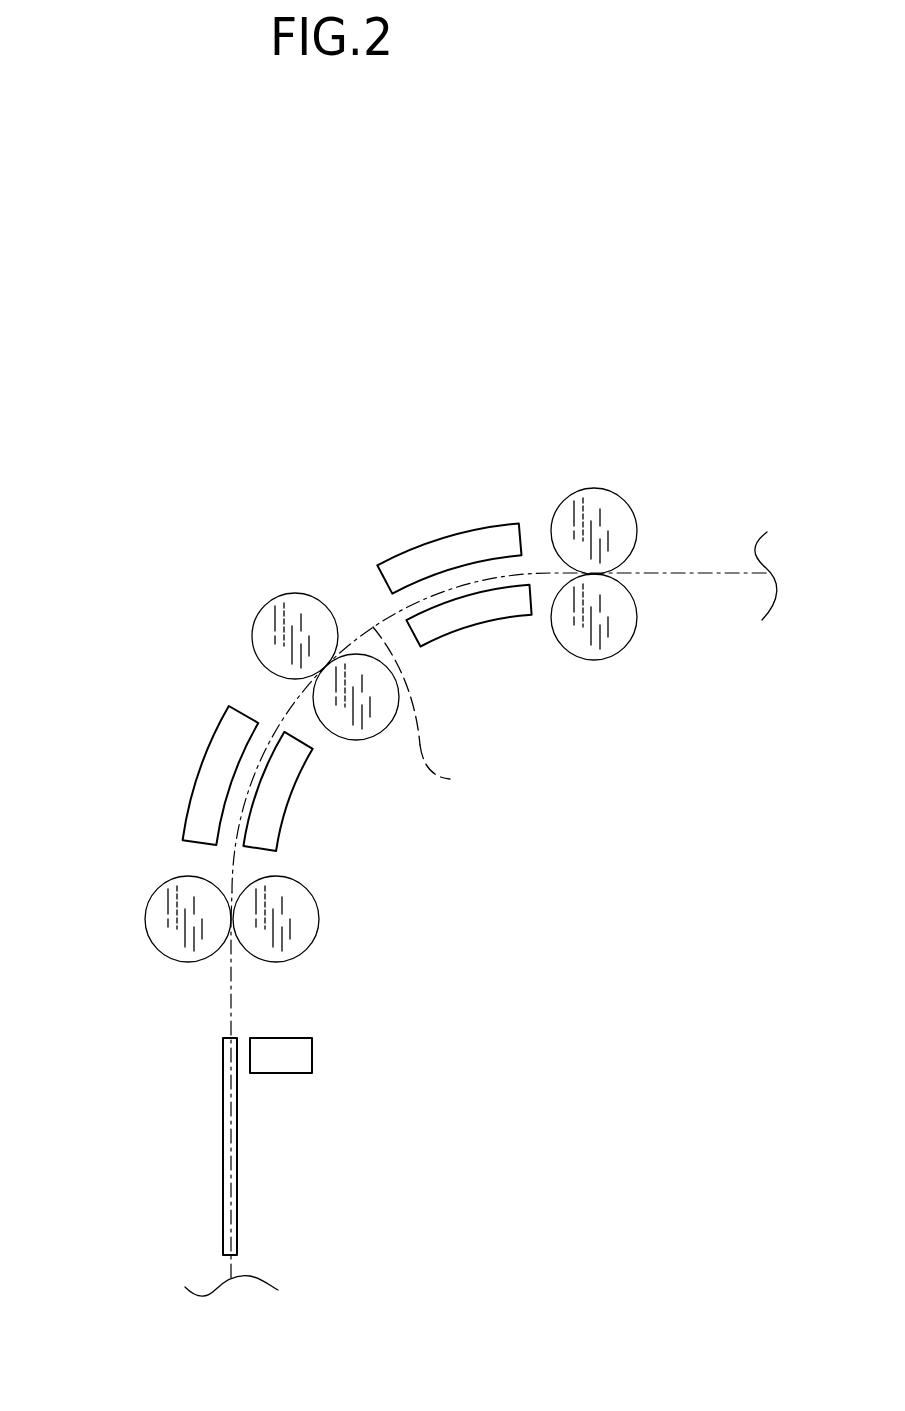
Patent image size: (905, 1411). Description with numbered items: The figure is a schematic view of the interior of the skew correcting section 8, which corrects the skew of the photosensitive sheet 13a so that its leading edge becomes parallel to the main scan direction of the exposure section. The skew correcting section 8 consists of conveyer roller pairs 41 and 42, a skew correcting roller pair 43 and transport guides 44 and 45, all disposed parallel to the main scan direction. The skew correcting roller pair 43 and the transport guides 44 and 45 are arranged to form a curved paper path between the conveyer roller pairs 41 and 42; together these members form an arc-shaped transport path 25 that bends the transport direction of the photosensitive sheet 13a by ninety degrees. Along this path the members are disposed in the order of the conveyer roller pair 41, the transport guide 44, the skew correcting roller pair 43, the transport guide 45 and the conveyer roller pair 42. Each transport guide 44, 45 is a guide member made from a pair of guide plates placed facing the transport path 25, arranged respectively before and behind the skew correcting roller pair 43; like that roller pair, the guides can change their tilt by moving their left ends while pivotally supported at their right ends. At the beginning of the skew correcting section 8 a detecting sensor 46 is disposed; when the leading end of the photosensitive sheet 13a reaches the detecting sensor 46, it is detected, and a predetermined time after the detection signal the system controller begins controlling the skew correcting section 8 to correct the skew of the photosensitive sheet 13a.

The skew correcting section 8 is at (380, 307).
The photosensitive sheet 13a is at (223, 1091).
The transport path 25 is at (450, 779).
The conveyer roller pair 41 is at (145, 919).
The conveyer roller pair 42 is at (593, 488).
The skew correcting roller pair 43 is at (251, 637).
The transport guide 44 is at (217, 730).
The transport guide 45 is at (446, 541).
The detecting sensor 46 is at (312, 1056).